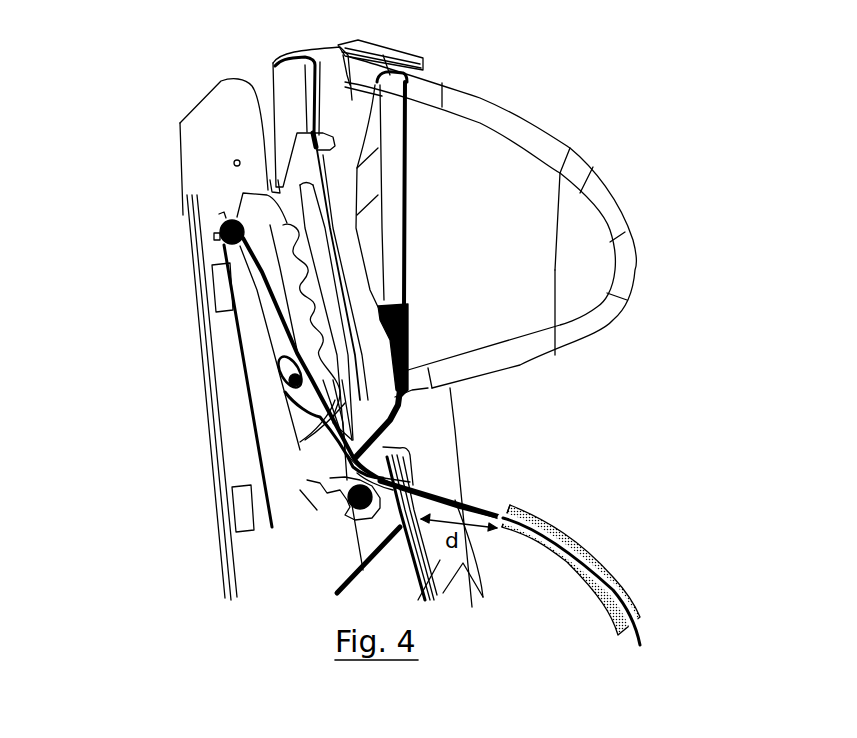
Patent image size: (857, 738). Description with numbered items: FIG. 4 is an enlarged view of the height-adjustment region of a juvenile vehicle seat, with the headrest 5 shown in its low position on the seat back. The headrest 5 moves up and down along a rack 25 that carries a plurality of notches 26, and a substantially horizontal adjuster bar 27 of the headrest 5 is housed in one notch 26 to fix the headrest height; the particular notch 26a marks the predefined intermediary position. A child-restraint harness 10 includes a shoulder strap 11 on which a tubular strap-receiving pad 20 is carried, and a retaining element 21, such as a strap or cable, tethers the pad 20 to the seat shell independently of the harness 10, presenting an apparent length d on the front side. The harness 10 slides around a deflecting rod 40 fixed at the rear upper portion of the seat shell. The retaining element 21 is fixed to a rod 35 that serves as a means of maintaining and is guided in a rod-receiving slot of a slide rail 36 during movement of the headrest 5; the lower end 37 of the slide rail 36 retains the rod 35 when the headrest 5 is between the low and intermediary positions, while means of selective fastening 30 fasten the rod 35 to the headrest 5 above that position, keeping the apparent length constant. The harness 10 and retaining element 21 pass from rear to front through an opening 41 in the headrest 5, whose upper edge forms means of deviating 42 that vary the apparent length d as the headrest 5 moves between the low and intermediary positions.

The headrest 5 is at (500, 123).
The child-restraint harness 10 is at (258, 308).
The shoulder strap 11 is at (503, 516).
The tubular strap-receiving pad 20 is at (595, 557).
The retaining element 21 is at (300, 442).
The rack 25 is at (265, 195).
The notch 26 is at (313, 300).
The notch of the predefined intermediary position 26a is at (415, 368).
The adjuster bar 27 is at (350, 508).
The means of selective fastening 30 is at (307, 480).
The rod 35 is at (288, 375).
The slide rail 36 is at (282, 332).
The lower end of the slide rail 37 is at (302, 408).
The deflecting rod 40 is at (220, 230).
The opening 41 is at (422, 485).
The means of deviating 42 is at (407, 473).